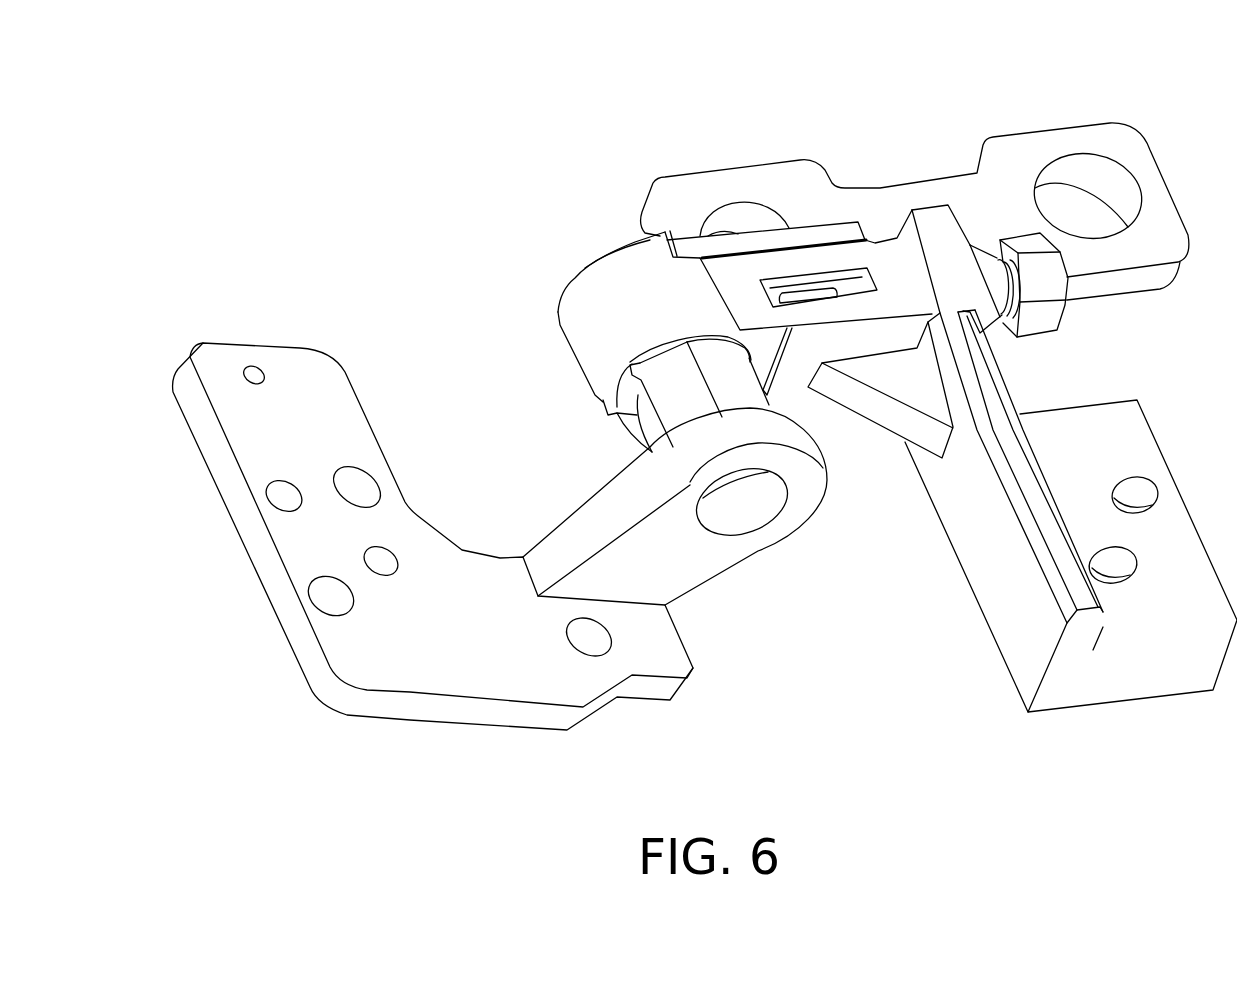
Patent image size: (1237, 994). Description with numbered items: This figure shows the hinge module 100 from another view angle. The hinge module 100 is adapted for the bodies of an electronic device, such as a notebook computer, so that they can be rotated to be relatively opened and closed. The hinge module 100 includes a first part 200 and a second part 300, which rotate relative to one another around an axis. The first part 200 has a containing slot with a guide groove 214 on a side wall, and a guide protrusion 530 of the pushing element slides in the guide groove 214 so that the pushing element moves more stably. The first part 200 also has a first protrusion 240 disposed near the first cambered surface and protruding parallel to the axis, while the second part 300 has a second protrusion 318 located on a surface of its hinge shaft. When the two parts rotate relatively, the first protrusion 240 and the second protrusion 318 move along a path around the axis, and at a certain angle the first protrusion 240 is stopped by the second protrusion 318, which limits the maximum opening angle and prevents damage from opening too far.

The hinge module 100 is at (1236, 785).
The first part 200 is at (943, 290).
The guide groove 214 is at (773, 273).
The first protrusion 240 is at (618, 385).
The second part 300 is at (437, 700).
The second protrusion 318 is at (667, 372).
The guide protrusion 530 is at (817, 293).